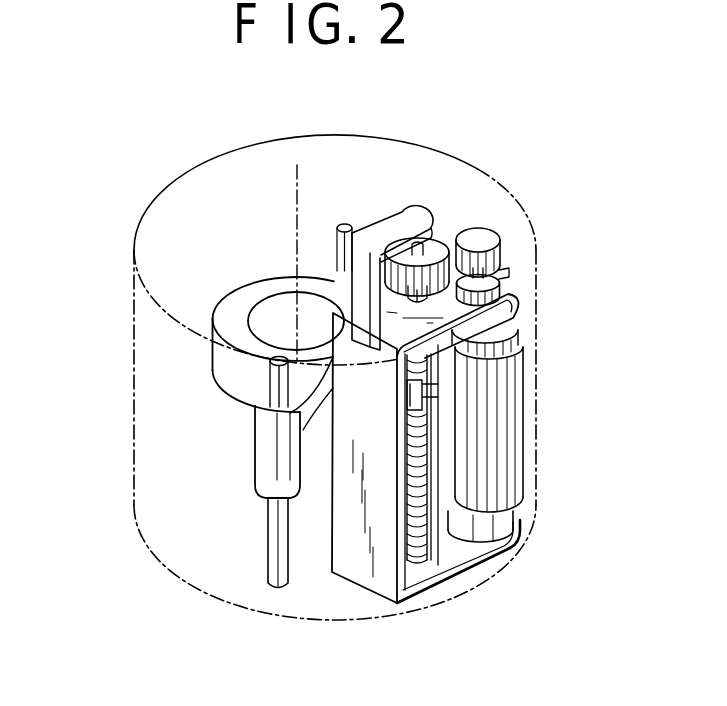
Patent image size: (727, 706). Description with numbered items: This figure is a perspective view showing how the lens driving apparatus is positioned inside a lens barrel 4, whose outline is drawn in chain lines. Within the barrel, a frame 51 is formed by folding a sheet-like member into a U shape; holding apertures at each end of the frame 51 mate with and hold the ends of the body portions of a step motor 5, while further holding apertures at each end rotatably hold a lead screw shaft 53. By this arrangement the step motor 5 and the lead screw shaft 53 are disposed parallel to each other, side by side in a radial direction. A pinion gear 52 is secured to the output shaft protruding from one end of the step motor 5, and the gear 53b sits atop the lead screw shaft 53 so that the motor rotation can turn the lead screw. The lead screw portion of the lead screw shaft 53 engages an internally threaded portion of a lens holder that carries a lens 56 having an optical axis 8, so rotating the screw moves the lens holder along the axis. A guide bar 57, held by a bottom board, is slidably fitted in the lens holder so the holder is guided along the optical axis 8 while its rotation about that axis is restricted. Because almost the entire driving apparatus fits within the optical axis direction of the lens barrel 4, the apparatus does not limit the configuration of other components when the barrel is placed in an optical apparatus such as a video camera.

The lens barrel 4 is at (135, 418).
The optical axis 8 is at (298, 188).
The lens 56 is at (274, 313).
The guide bar 57 is at (261, 582).
The frame 51 is at (360, 577).
The lead screw shaft 53 is at (430, 547).
The gear 53b is at (440, 247).
The pinion gear 52 is at (484, 236).
The step motor 5 is at (513, 410).